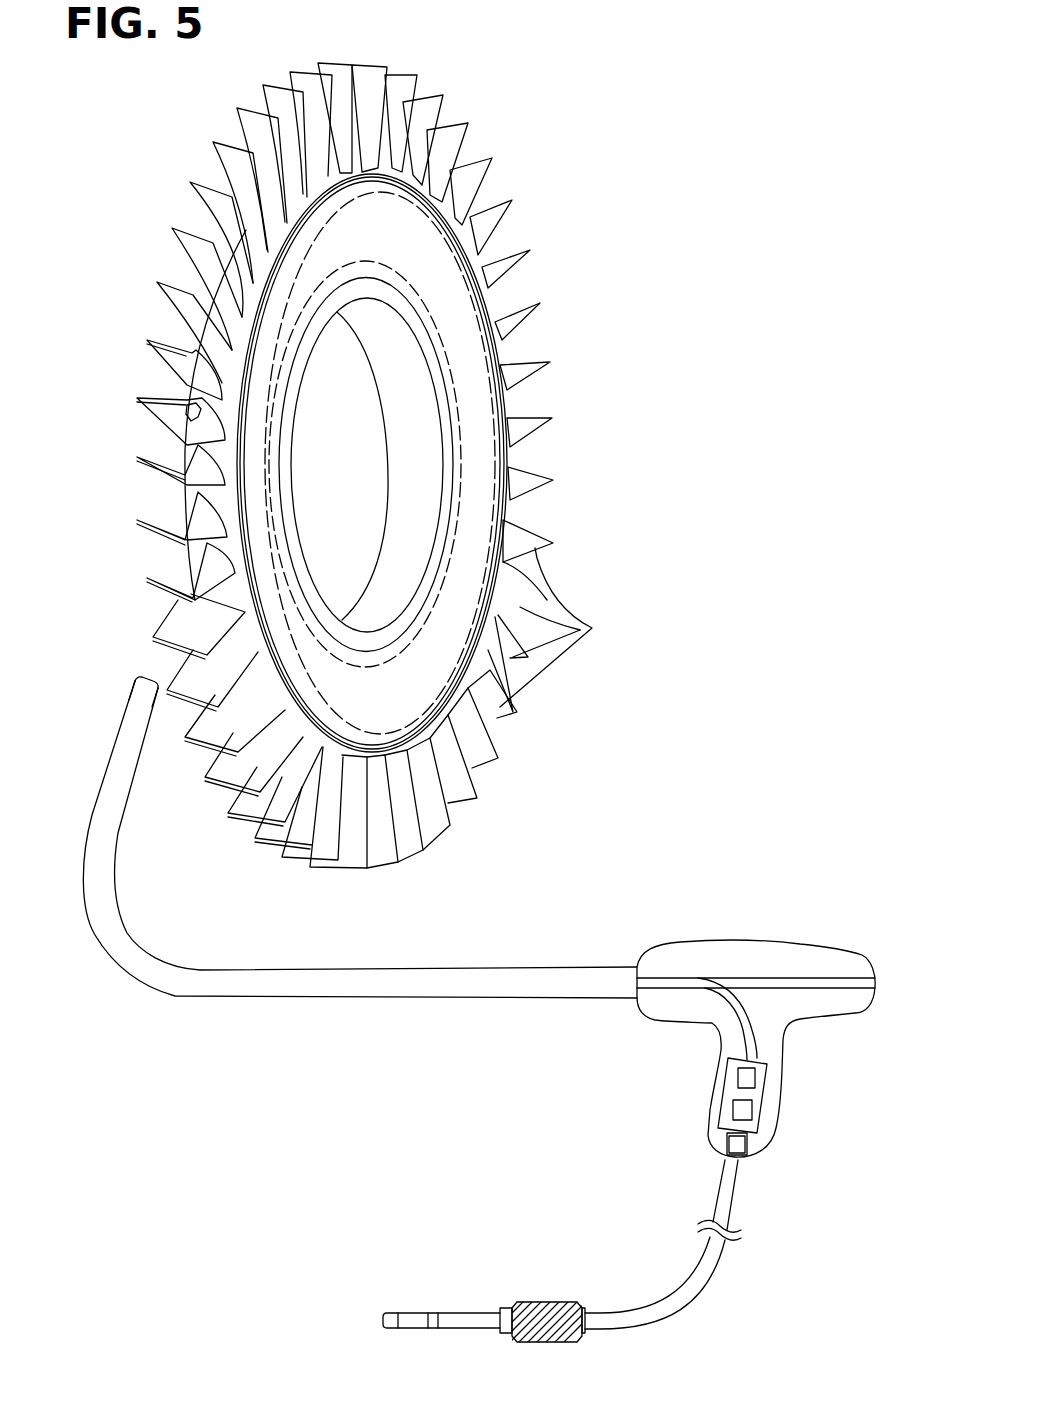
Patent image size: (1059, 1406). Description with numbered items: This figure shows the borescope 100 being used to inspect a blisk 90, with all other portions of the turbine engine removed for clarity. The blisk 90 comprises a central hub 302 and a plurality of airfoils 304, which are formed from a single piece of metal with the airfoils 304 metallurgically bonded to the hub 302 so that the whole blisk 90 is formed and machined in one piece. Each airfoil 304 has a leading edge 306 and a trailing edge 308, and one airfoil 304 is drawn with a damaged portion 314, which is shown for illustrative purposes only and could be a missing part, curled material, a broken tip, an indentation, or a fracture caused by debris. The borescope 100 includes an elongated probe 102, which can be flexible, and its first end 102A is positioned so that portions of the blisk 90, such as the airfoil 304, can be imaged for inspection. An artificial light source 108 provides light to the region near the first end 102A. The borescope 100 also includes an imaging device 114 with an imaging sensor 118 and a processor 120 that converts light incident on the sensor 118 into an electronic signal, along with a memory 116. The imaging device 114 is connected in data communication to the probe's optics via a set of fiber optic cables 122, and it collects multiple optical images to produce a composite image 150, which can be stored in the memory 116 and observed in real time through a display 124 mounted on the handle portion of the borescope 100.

The blisk 90 is at (515, 86).
The central hub 302 is at (472, 400).
The airfoil 304 is at (593, 628).
The leading edge 306 is at (178, 440).
The trailing edge 308 is at (188, 408).
The damaged portion 314 is at (185, 411).
The borescope 100 is at (742, 905).
The elongated probe 102 is at (455, 942).
The first end 102A is at (143, 678).
The display 124 is at (860, 952).
The set of fiber optic cables 122 is at (753, 1033).
The imaging device 114 is at (737, 1093).
The memory 116 is at (723, 1140).
The imaging sensor 118 is at (743, 1080).
The processor 120 is at (747, 1107).
The composite image 150 is at (748, 1146).
The artificial light source 108 is at (540, 1312).